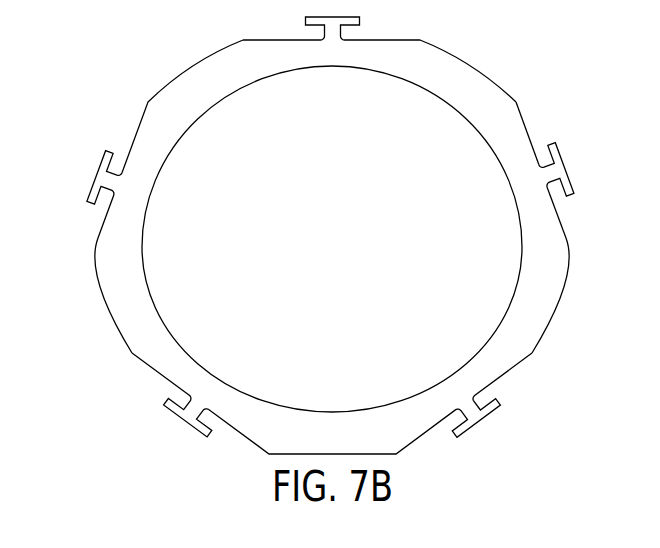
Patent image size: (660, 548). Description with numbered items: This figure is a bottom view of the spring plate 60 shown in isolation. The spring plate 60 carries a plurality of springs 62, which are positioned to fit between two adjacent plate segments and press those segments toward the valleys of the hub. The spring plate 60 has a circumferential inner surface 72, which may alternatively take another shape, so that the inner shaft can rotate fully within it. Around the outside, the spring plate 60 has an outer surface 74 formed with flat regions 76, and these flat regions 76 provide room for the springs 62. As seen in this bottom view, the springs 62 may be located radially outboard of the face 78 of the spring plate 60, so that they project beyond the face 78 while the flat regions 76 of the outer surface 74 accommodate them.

The spring plate 60 is at (338, 235).
The spring 62 is at (566, 170).
The circumferential inner surface 72 is at (213, 107).
The outer surface 74 is at (562, 308).
The flat region 76 is at (563, 235).
The face 78 is at (112, 273).